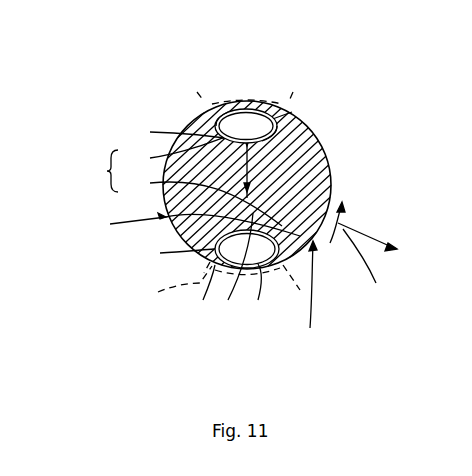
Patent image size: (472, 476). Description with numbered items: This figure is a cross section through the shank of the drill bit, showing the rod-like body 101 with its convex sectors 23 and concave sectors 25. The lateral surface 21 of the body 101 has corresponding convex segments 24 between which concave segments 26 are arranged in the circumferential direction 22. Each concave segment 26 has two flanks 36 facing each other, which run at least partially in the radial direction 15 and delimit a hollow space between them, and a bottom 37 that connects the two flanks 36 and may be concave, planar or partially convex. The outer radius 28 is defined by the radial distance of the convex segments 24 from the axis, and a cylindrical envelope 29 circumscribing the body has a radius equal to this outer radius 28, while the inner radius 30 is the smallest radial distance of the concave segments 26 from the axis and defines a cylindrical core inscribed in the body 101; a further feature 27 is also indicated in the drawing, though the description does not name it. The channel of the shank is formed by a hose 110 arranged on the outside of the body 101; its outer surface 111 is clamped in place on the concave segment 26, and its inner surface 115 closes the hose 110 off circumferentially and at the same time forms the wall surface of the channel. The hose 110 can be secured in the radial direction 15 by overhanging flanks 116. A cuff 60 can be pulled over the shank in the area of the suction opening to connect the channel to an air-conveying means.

The hose 110 is at (245, 110).
The inner surface 115 is at (233, 112).
The overhanging flanks 116 is at (280, 112).
The cuff 60 is at (273, 128).
The outer surface 111 is at (213, 124).
The inner radius 30 is at (186, 158).
The rod-like body 101 is at (96, 171).
The convex sectors 23 is at (207, 140).
The concave sectors 25 is at (202, 200).
The outer radius 28 is at (191, 225).
The lower bore opening 27 is at (172, 254).
The cylindrical envelope 29 is at (171, 285).
The flanks 36 is at (228, 291).
The bottom 37 is at (235, 266).
The concave segments 26 is at (277, 318).
The convex segments 24 is at (316, 295).
The lateral surface 21 is at (334, 352).
The circumferential direction 22 is at (346, 217).
The radial direction 15 is at (366, 266).